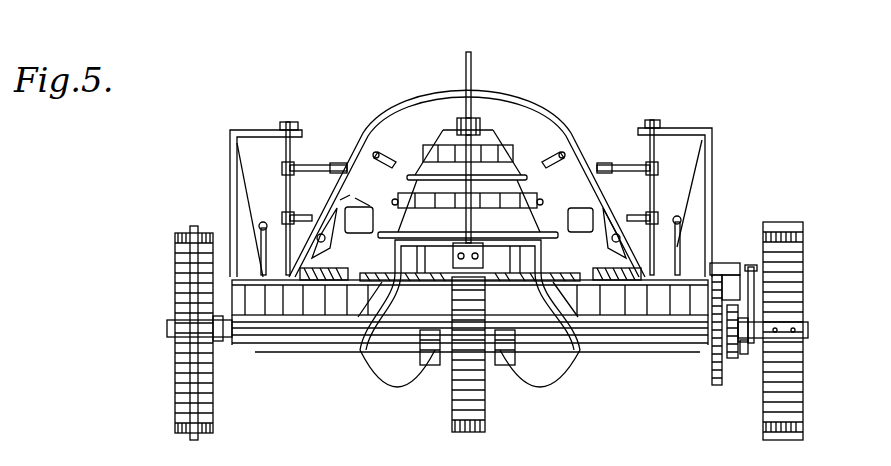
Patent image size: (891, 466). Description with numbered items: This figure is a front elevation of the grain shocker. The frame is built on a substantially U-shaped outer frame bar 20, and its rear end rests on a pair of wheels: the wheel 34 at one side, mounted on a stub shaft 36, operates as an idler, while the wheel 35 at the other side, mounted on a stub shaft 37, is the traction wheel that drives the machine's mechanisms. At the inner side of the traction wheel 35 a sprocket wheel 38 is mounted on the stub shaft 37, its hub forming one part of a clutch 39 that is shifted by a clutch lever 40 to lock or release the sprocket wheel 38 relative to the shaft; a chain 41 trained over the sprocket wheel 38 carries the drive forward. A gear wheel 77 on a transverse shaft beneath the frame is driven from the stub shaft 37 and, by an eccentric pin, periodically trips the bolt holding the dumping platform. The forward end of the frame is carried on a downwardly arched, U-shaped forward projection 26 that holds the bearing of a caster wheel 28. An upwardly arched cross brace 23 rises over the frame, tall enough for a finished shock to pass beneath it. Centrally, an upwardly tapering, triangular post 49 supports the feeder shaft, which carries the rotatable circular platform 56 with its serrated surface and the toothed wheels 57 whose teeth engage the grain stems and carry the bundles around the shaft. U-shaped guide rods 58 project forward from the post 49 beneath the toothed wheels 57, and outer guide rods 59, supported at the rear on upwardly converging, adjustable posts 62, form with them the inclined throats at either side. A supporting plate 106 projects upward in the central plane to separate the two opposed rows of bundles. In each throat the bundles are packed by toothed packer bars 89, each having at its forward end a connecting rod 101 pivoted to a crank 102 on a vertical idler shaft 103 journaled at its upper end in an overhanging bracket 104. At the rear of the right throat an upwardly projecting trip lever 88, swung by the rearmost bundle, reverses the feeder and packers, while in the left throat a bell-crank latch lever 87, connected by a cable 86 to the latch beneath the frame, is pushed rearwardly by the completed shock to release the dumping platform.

The supporting plate 106 is at (471, 56).
The upwardly-arched cross brace 23 is at (514, 101).
The overhanging bracket 104 is at (260, 130).
The idler shaft 103 is at (290, 122).
The second connecting rod 101 is at (313, 165).
The crank 102 is at (282, 168).
The packer 89 is at (342, 163).
The outer guide rod 59 is at (388, 154).
The forwardly projecting guide 58 is at (409, 177).
The toothed wheel 57 is at (518, 148).
The standard or post 62 is at (349, 184).
The trip lever 88 is at (333, 240).
The latch lever 87 is at (612, 215).
The cable 86 is at (683, 243).
The upwardly tapering post 49 is at (468, 201).
The movable circular platform 56 is at (344, 279).
The frame bar 20 is at (292, 318).
The forward projection 26 is at (383, 367).
The caster wheel 28 is at (453, 405).
The wheel 34 is at (182, 275).
The stub shaft 36 is at (172, 330).
The wheel 35 is at (800, 256).
The clutch lever 40 is at (752, 290).
The stub shaft 37 is at (808, 331).
The clutch 39 is at (742, 345).
The sprocket wheel 38 is at (736, 366).
The chain 41 is at (732, 360).
The gear wheel 77 is at (717, 386).